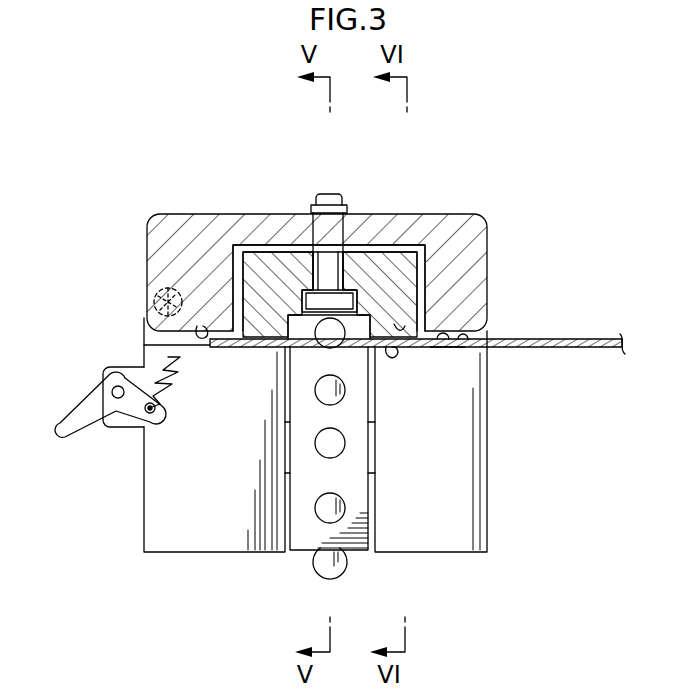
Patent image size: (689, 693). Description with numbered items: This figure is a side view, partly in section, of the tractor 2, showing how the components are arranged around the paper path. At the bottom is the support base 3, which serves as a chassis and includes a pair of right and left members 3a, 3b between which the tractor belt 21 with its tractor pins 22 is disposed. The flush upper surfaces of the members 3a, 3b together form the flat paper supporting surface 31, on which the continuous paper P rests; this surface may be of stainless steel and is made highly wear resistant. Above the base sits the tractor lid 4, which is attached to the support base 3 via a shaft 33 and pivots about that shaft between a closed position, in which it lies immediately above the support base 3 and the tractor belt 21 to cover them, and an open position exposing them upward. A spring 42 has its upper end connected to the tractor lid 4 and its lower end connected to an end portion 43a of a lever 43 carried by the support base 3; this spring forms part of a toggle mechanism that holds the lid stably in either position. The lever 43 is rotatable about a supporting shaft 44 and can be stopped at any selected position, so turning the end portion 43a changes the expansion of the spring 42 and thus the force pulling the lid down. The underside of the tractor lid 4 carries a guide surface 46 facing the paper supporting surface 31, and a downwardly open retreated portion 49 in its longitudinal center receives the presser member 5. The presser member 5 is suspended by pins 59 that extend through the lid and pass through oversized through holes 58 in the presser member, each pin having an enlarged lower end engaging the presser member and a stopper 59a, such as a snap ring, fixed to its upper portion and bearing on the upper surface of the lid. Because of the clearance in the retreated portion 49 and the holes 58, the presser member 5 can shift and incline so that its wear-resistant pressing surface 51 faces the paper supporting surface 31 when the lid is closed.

The cutter unit 2 is at (516, 179).
The support base 3 is at (480, 462).
The left member 3a is at (212, 535).
The right member 3b is at (440, 540).
The tractor lid 4 is at (440, 232).
The presser member 5 is at (400, 268).
The tractor belt 21 is at (303, 533).
The tractor pins 22 is at (328, 346).
The paper supporting surface 31 is at (447, 340).
The shaft 33 is at (147, 287).
The spring 42 is at (147, 357).
The lever 43 is at (82, 402).
The end portion 43a is at (153, 415).
The supporting shaft 44 is at (118, 400).
The guide surface 46 is at (198, 328).
The retreated portion 49 is at (240, 272).
The pressing surface 51 is at (400, 328).
The through holes 58 is at (352, 265).
The pins 59 is at (312, 228).
The stopper 59a is at (335, 290).
The continuous paper P is at (562, 340).